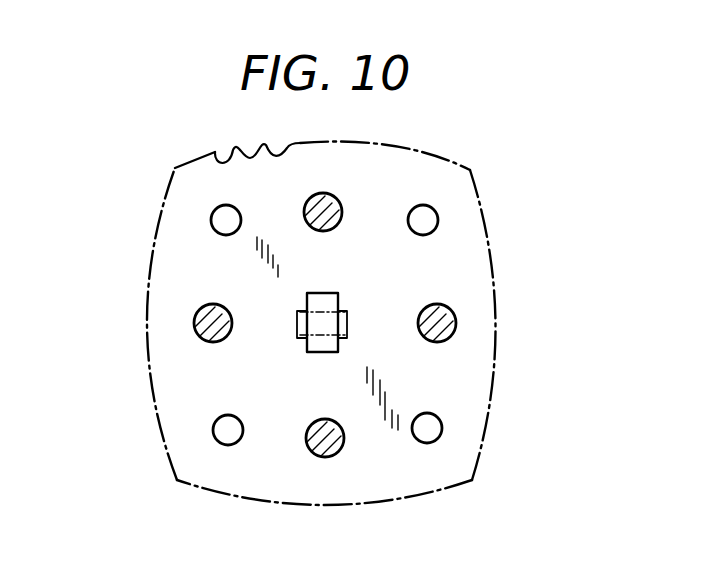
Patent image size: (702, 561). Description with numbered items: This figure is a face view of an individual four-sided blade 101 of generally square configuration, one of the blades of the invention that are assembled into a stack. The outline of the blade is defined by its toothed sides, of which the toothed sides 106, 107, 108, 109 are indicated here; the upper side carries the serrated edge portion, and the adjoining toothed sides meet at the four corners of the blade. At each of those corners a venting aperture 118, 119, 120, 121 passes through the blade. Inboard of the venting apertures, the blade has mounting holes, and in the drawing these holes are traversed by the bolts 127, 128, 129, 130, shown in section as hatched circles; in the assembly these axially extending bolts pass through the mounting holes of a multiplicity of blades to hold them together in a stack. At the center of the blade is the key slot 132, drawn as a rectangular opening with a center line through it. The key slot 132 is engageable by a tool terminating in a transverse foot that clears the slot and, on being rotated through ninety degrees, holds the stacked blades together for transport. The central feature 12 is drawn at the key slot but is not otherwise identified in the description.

The central mounting block 12 is at (392, 297).
The four-sided blade 101 is at (272, 468).
The toothed side 106 is at (240, 148).
The toothed side 107 is at (494, 400).
The toothed side 108 is at (420, 493).
The toothed side 109 is at (160, 433).
The venting aperture 118 is at (218, 223).
The venting aperture 119 is at (430, 218).
The venting aperture 120 is at (437, 433).
The venting aperture 121 is at (222, 434).
The bolt 127 is at (337, 196).
The bolt 128 is at (457, 325).
The bolt 129 is at (194, 330).
The bolt 130 is at (344, 446).
The key slot 132 is at (307, 348).